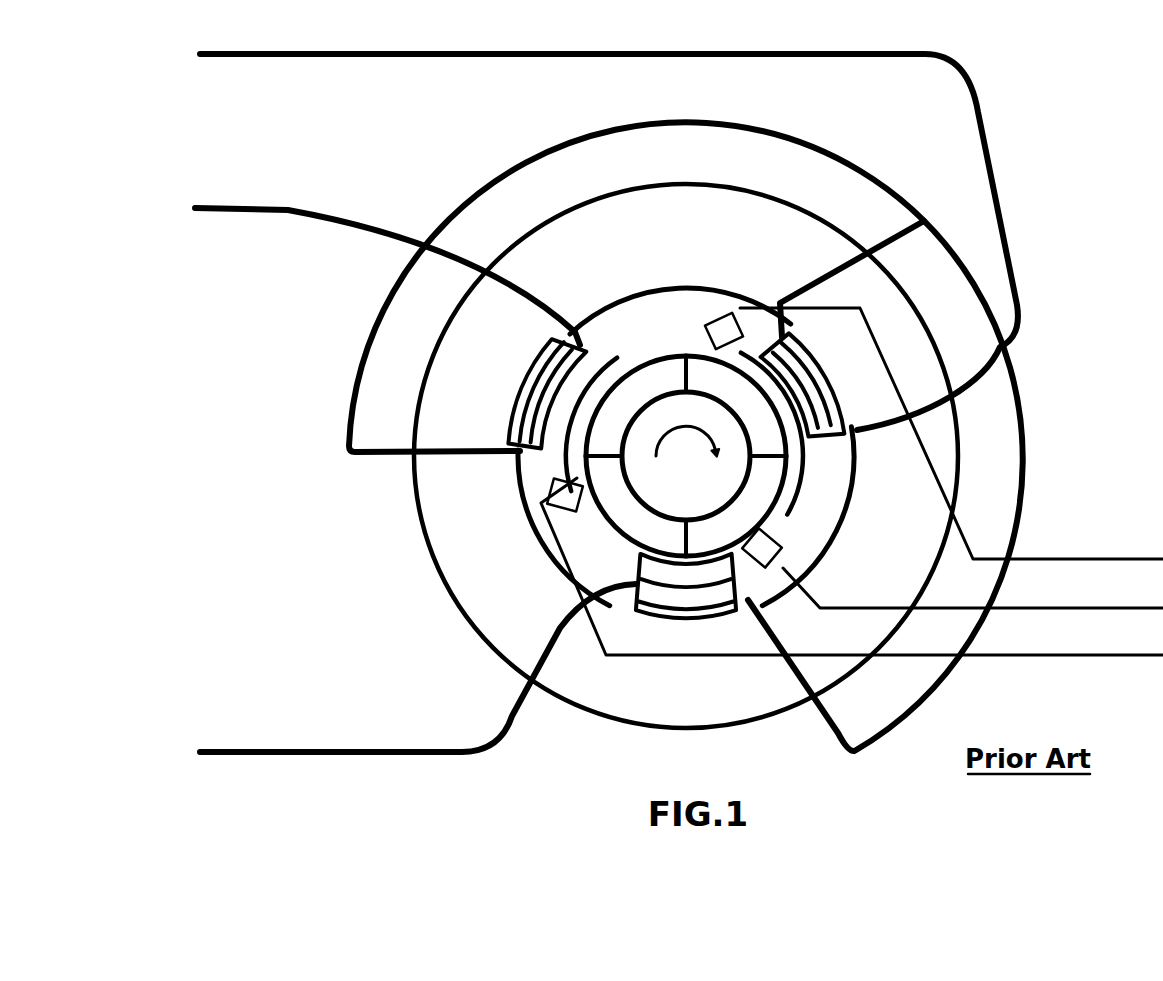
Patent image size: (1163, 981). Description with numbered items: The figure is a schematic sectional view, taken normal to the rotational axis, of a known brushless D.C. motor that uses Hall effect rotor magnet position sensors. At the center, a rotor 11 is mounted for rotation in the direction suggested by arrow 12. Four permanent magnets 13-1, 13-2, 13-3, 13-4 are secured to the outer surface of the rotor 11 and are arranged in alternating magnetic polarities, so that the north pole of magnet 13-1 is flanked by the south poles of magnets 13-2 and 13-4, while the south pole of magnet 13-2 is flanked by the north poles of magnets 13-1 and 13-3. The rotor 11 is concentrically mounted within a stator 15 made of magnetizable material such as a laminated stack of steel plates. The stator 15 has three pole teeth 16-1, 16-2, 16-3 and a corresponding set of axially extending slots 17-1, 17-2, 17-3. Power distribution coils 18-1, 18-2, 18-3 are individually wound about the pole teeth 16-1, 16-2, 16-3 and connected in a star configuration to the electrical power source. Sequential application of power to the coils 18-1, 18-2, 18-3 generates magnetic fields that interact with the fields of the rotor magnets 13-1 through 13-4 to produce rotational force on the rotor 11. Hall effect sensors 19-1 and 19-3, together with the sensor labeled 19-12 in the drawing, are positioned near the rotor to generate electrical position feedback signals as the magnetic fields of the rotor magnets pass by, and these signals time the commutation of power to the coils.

The rotor 11 is at (707, 468).
The arrow 12 is at (680, 420).
The permanent magnet 13-1 is at (757, 383).
The permanent magnet 13-2 is at (760, 482).
The permanent magnet 13-3 is at (612, 500).
The permanent magnet 13-4 is at (655, 378).
The stator 15 is at (722, 223).
The pole tooth 16-1 is at (790, 352).
The pole tooth 16-2 is at (660, 582).
The pole tooth 16-3 is at (557, 375).
The axially extending slot 17-1 is at (817, 495).
The axially extending slot 17-2 is at (527, 481).
The axially extending slot 17-3 is at (677, 312).
The power distribution coil 18-1 is at (805, 372).
The power distribution coil 18-2 is at (698, 597).
The power distribution coil 18-3 is at (550, 410).
The Hall effect sensor 19-1 is at (787, 546).
The Hall effect sensor 19-3 is at (712, 320).
The position detecting element 19-12 is at (560, 497).